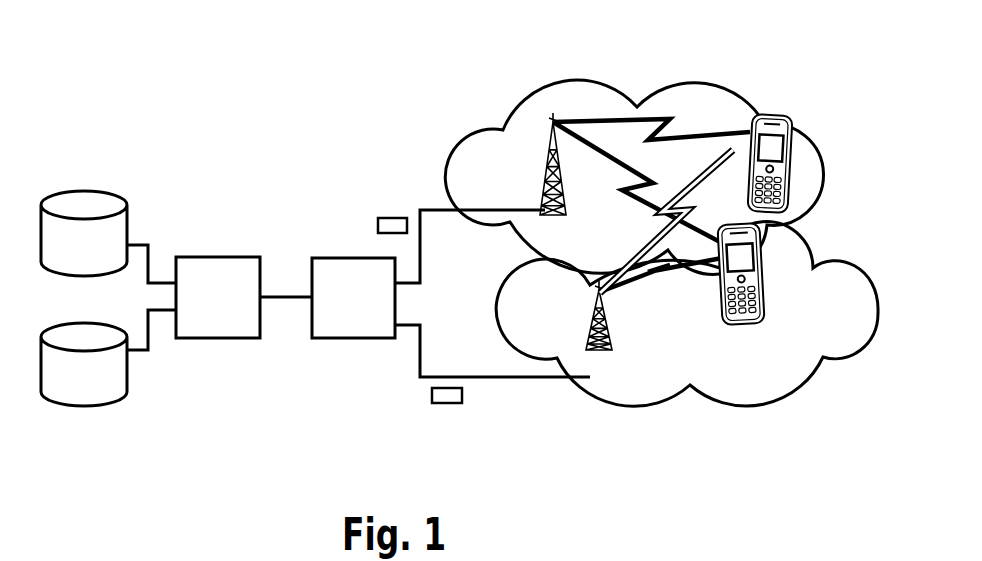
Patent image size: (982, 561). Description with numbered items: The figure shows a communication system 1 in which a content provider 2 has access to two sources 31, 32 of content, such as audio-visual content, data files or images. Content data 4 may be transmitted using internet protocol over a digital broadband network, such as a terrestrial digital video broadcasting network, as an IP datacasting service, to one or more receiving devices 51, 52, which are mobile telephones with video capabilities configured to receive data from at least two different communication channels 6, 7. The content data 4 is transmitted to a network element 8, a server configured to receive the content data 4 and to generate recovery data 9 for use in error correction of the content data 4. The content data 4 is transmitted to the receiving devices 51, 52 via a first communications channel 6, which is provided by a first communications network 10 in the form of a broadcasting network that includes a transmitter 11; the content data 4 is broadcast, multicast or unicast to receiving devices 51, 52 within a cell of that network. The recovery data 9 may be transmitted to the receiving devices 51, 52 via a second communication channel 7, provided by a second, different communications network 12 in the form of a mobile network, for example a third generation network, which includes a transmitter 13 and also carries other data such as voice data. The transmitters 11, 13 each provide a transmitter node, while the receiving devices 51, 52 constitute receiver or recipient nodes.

The communication system 1 is at (300, 466).
The content provider 2 is at (217, 322).
The source of content 31 is at (95, 205).
The source of content 32 is at (97, 390).
The content data 4 is at (378, 223).
The receiving device 51 is at (783, 122).
The receiving device 52 is at (763, 295).
The first communications channel 6 is at (659, 122).
The second communications channel 7 is at (717, 160).
The network element 8 is at (355, 323).
The recovery data 9 is at (450, 403).
The first communications network 10 is at (522, 100).
The transmitter 11 is at (545, 178).
The second communications network 12 is at (797, 395).
The transmitter 13 is at (603, 335).